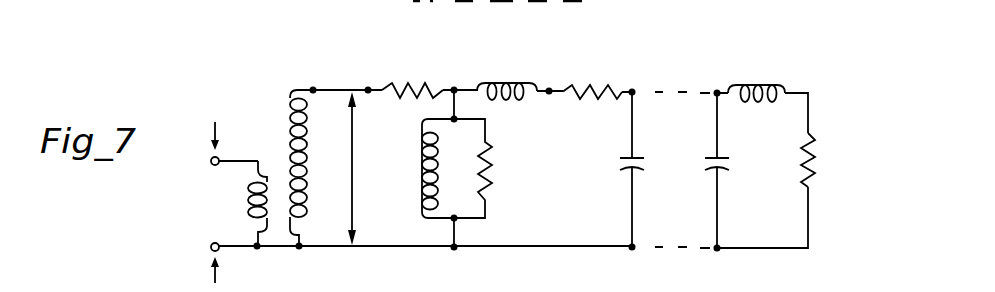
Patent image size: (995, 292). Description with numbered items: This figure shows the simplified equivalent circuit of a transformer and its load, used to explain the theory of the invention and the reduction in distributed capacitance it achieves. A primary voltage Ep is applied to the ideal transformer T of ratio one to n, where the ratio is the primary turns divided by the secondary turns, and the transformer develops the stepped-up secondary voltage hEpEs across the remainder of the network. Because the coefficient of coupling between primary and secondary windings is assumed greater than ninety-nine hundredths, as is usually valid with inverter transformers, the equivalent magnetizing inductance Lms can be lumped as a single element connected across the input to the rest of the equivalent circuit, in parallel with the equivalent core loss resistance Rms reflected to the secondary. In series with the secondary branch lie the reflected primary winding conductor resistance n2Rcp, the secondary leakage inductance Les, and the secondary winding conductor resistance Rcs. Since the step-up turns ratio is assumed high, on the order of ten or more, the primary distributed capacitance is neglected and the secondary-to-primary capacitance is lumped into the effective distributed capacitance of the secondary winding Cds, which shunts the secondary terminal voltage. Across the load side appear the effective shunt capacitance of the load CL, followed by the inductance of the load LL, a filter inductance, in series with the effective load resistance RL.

The primary voltage Ep is at (231, 202).
The ideal transformer T is at (280, 168).
The secondary voltage hEpEs is at (350, 168).
The reflected primary winding resistance n2Rcp is at (405, 84).
The secondary leakage inductance Les is at (494, 78).
The secondary winding conductor resistance Rcs is at (580, 81).
The equivalent magnetizing inductance Lms is at (385, 186).
The equivalent core loss resistance Rms is at (488, 182).
The effective distributed capacitance of secondary winding Cds is at (625, 167).
The effective shunt capacitance of load CL is at (710, 167).
The inductance of load LL is at (752, 82).
The effective load resistance RL is at (812, 167).